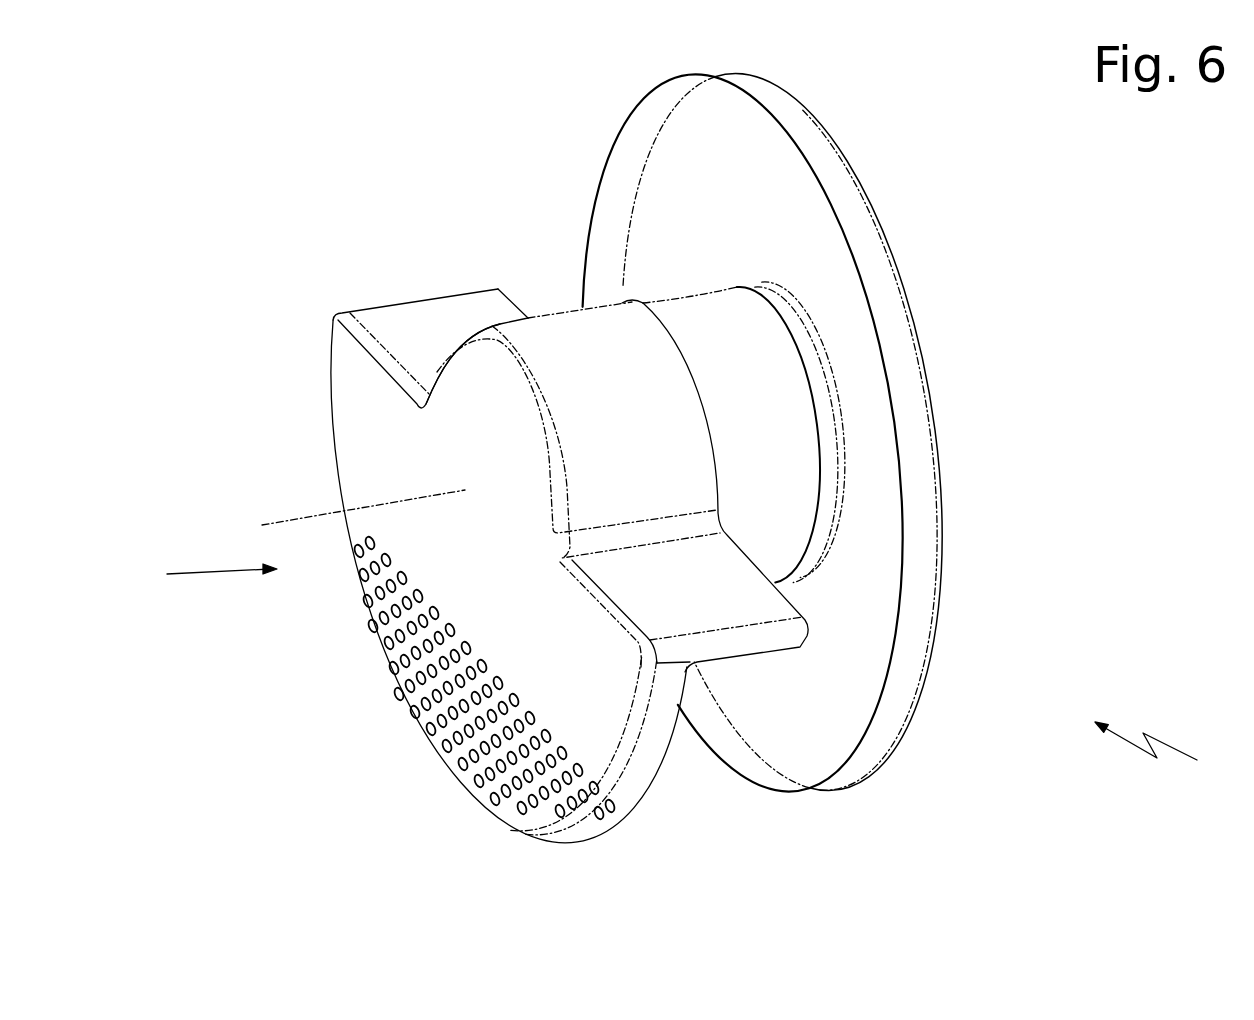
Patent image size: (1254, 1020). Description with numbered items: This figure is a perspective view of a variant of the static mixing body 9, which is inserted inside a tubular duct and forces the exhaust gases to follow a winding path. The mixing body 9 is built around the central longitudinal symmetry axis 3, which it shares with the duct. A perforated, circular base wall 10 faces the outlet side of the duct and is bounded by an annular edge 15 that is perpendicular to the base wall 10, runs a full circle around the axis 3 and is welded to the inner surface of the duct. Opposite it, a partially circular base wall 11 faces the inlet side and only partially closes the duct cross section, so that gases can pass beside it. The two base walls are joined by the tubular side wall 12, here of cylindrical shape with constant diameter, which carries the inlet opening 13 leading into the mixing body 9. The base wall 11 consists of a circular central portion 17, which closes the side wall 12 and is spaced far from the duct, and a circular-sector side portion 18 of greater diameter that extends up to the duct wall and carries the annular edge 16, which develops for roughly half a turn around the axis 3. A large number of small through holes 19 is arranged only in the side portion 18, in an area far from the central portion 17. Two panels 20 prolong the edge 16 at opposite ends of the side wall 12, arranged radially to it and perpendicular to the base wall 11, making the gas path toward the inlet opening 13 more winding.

The central longitudinal symmetry axis 3 is at (271, 520).
The mixing body 9 is at (1157, 752).
The base wall 10 is at (803, 236).
The base wall 11 is at (207, 574).
The tubular side wall 12 is at (564, 348).
The inlet opening 13 is at (698, 703).
The annular edge 15 is at (905, 668).
The annular edge 16 is at (630, 787).
The central portion 17 is at (495, 423).
The side portion 18 is at (373, 421).
The through holes 19 is at (427, 700).
The panels 20 is at (420, 345).